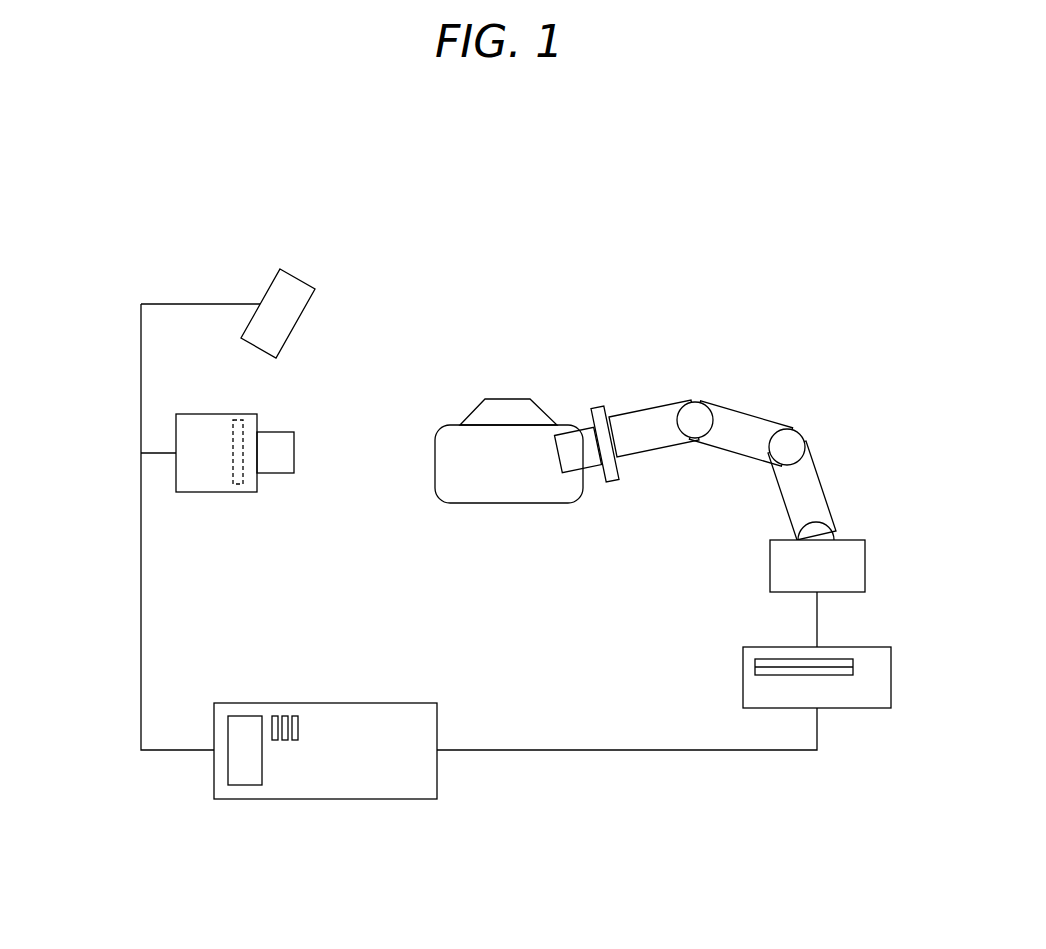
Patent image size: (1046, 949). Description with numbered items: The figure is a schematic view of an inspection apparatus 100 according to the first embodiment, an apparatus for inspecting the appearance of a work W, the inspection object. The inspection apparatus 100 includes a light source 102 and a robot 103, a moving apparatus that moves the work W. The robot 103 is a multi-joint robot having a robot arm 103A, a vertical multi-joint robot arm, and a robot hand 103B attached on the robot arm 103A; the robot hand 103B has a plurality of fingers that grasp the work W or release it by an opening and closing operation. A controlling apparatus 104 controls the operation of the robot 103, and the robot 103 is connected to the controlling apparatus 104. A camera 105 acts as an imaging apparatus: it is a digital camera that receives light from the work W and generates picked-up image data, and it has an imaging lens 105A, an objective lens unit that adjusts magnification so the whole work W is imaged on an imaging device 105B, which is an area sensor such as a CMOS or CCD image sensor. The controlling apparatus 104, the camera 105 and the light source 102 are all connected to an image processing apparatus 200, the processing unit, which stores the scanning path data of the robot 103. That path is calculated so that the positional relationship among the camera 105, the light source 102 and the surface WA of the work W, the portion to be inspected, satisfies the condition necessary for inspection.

The inspection apparatus 100 is at (650, 195).
The light source 102 is at (305, 280).
The robot 103 is at (762, 415).
The robot arm 103A is at (813, 495).
The robot hand 103B is at (579, 438).
The controlling apparatus 104 is at (892, 666).
The camera 105 is at (176, 413).
The imaging lens 105A is at (278, 432).
The imaging device 105B is at (238, 486).
The image processing apparatus 200 is at (405, 702).
The work W is at (488, 398).
The surface WA is at (433, 466).